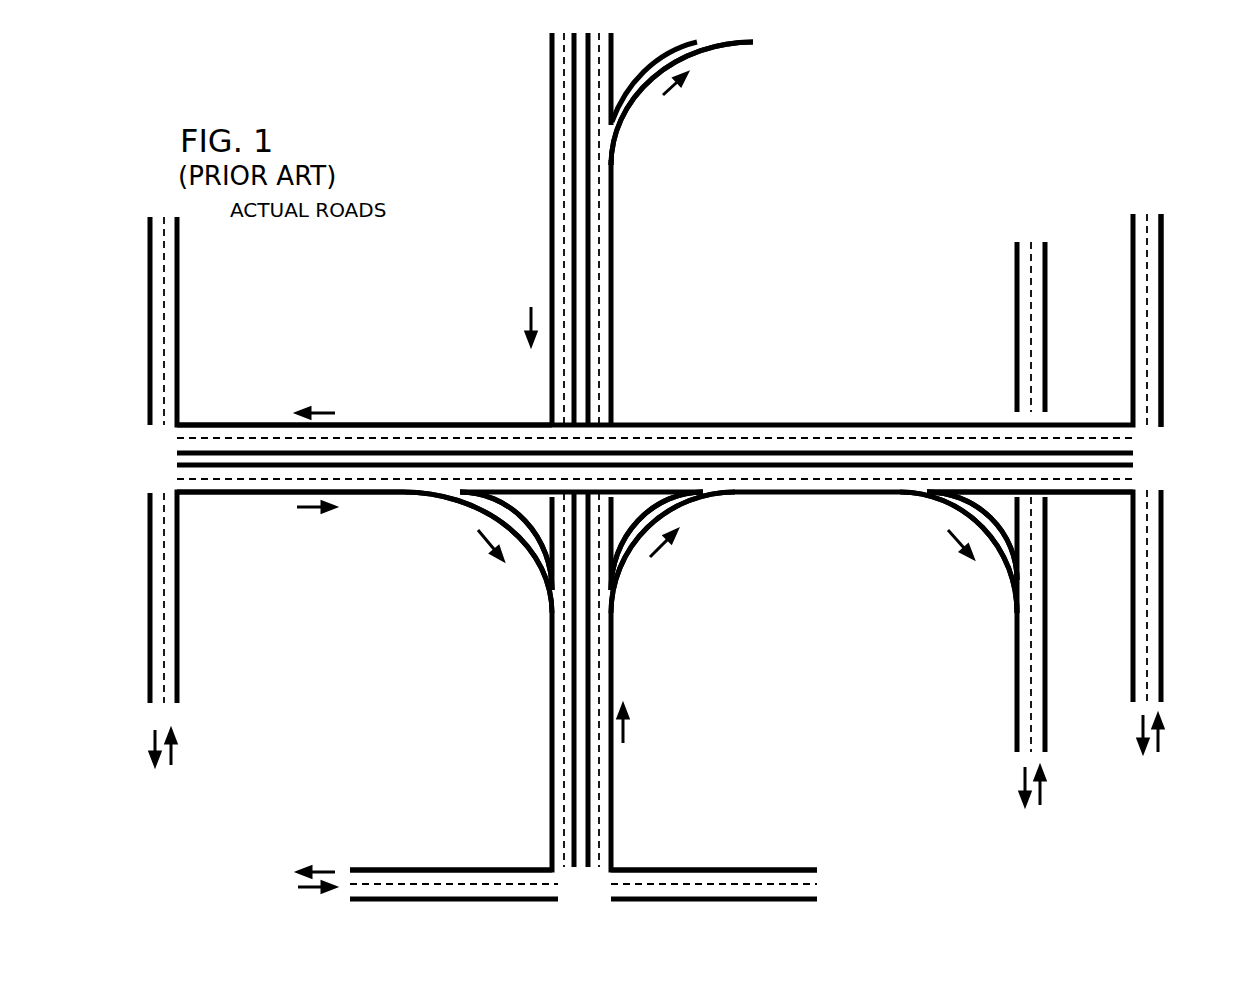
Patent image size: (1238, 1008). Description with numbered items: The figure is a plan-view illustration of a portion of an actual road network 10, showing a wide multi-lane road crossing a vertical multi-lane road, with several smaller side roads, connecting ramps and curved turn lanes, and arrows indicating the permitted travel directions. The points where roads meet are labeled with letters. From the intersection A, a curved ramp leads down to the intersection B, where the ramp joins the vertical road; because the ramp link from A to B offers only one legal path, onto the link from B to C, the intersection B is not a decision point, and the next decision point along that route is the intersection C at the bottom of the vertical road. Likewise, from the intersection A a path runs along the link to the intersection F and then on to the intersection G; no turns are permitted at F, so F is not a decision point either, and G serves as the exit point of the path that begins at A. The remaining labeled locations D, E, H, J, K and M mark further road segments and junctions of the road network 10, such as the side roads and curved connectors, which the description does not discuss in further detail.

The road network 10 is at (712, 257).
The intersection A is at (477, 552).
The intersection B is at (506, 561).
The intersection C is at (364, 625).
The road segment D is at (682, 513).
The road segment E is at (657, 561).
The intersection F is at (673, 552).
The intersection G is at (944, 552).
The road segment H is at (682, 103).
The road segment J is at (1182, 320).
The road segment K is at (972, 560).
The road segment M is at (714, 848).